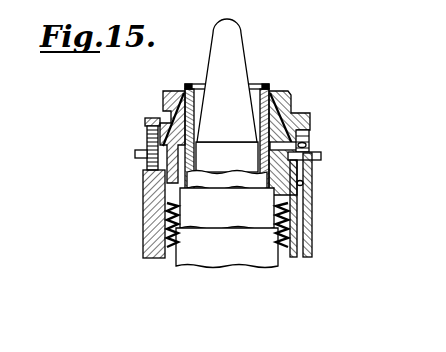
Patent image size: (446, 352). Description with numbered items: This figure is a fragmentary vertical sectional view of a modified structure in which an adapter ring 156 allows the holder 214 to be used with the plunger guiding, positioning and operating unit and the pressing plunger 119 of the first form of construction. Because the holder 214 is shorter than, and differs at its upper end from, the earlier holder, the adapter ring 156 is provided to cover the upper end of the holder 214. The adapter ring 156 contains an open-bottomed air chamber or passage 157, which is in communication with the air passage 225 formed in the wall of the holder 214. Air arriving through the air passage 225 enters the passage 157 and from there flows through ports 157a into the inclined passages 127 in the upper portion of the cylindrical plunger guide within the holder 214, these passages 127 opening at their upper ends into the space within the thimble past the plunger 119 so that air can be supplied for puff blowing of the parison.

The tapered plug 119 is at (224, 67).
The inclined passages 127 is at (283, 94).
The adapter ring 156 is at (296, 112).
The ports 157a is at (147, 140).
The open-bottomed air chamber or passage 157 is at (313, 148).
The air passage 225 is at (304, 190).
The holder 214 is at (312, 218).